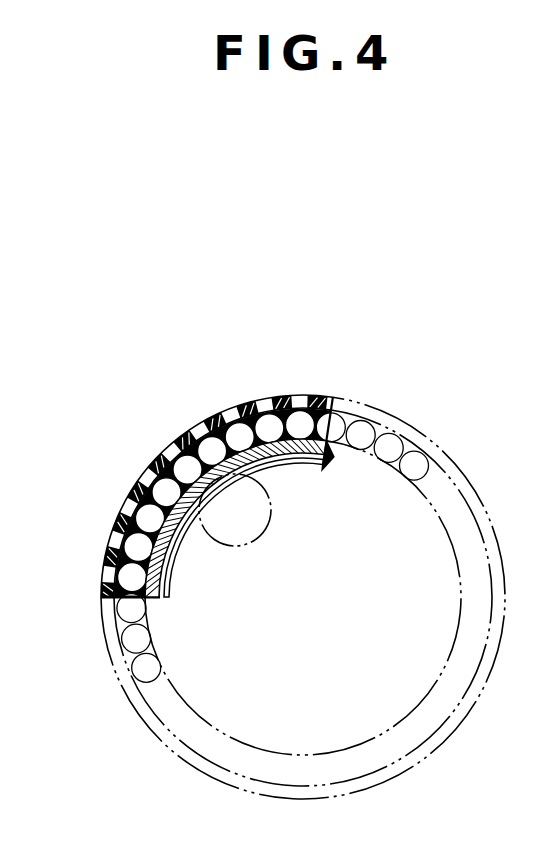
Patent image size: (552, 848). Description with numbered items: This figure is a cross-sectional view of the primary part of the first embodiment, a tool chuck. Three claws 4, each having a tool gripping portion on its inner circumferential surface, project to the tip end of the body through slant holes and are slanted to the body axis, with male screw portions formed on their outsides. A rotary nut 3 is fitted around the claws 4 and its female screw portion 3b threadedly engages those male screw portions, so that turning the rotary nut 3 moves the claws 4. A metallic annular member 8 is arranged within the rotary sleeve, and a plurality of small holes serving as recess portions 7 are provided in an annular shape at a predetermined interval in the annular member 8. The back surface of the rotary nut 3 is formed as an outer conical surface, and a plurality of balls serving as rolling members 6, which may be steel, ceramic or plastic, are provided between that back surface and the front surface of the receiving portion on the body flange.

The rotary nut 3 is at (173, 531).
The female screw portion 3b is at (173, 573).
The claw 4 is at (269, 513).
The rolling member 6 is at (205, 435).
The recess portion 7 is at (296, 403).
The annular member 8 is at (357, 403).